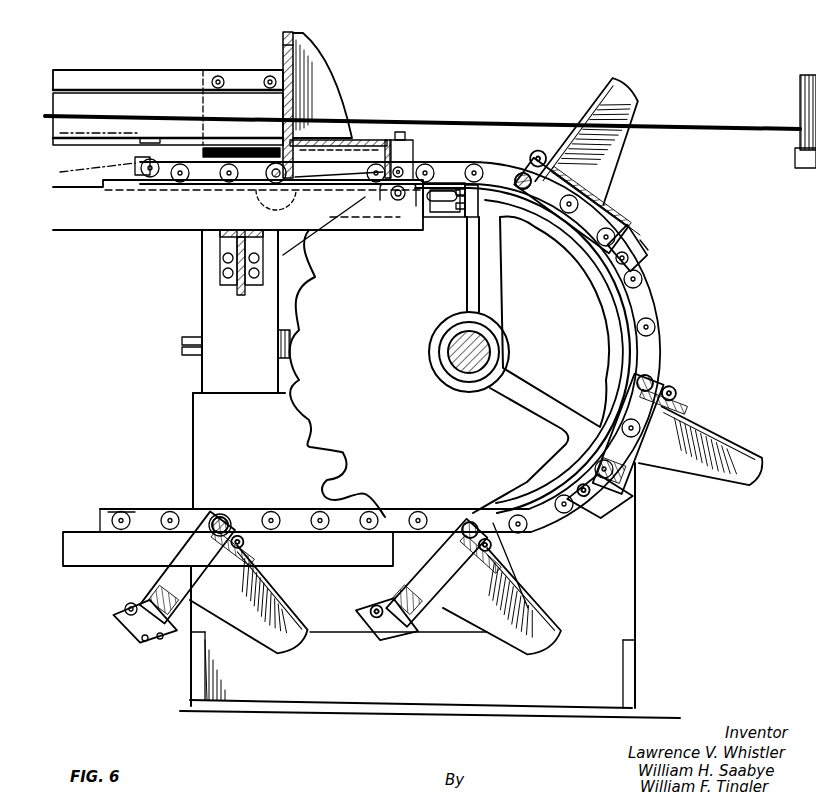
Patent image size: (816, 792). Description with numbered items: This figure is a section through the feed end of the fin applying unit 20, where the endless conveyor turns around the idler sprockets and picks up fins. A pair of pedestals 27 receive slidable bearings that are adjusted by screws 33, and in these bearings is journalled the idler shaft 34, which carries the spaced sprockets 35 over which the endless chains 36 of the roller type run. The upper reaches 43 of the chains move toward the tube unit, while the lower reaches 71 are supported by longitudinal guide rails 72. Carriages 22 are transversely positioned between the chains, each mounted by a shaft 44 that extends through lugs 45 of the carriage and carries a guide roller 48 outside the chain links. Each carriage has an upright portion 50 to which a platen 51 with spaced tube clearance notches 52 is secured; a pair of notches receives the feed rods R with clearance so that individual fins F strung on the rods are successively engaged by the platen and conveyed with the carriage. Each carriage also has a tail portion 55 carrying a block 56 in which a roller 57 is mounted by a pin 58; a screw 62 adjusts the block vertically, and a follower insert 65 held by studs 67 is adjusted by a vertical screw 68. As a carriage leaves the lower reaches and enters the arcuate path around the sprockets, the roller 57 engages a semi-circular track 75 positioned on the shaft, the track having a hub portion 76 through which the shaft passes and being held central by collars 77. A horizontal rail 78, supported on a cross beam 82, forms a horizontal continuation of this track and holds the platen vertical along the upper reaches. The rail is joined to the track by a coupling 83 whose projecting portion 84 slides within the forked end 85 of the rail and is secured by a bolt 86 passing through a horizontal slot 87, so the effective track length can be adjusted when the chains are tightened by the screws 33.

The fin applying unit 20 is at (150, 399).
The carriage 22 is at (637, 96).
The pedestal 27 is at (430, 690).
The screw 33 is at (182, 347).
The idler shaft 34 is at (446, 350).
The sprocket 35 is at (455, 365).
The endless chain 36 is at (167, 504).
The upper reach of the chain 43 is at (135, 162).
The shaft 44 is at (520, 174).
The lug 45 is at (228, 526).
The guide roller 48 is at (268, 180).
The upright portion 50 is at (300, 78).
The platen 51 is at (290, 32).
The tube clearance notch 52 is at (283, 47).
The tail portion 55 is at (612, 215).
The block 56 is at (650, 256).
The roller 57 is at (605, 270).
The pin 58 is at (129, 607).
The screw 62 is at (161, 639).
The follower insert 65 is at (645, 266).
The stud 67 is at (480, 9).
The screw 68 is at (144, 640).
The lower reach of the chain 71 is at (118, 510).
The guide rail 72 is at (86, 560).
The semi-circular track 75 is at (630, 353).
The hub portion 76 is at (452, 388).
The collar 77 is at (440, 380).
The horizontal rail 78 is at (352, 230).
The cross beam 82 is at (240, 290).
The coupling 83 is at (455, 185).
The projecting portion 84 is at (437, 180).
The forked end 85 is at (420, 218).
The bolt 86 is at (398, 201).
The horizontal slot 87 is at (452, 202).
The fin F is at (283, 63).
The feed rod R is at (694, 125).